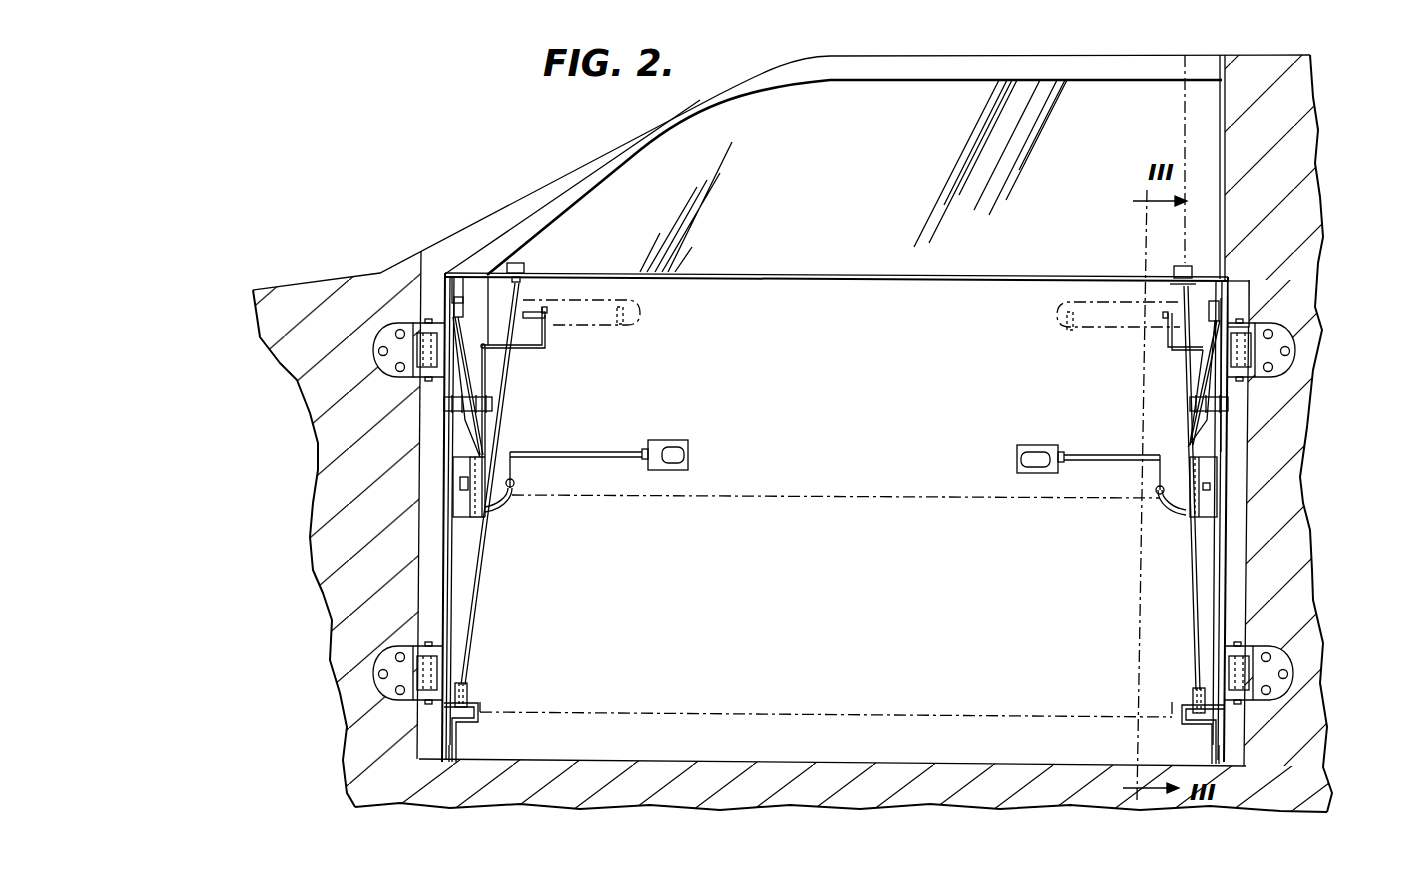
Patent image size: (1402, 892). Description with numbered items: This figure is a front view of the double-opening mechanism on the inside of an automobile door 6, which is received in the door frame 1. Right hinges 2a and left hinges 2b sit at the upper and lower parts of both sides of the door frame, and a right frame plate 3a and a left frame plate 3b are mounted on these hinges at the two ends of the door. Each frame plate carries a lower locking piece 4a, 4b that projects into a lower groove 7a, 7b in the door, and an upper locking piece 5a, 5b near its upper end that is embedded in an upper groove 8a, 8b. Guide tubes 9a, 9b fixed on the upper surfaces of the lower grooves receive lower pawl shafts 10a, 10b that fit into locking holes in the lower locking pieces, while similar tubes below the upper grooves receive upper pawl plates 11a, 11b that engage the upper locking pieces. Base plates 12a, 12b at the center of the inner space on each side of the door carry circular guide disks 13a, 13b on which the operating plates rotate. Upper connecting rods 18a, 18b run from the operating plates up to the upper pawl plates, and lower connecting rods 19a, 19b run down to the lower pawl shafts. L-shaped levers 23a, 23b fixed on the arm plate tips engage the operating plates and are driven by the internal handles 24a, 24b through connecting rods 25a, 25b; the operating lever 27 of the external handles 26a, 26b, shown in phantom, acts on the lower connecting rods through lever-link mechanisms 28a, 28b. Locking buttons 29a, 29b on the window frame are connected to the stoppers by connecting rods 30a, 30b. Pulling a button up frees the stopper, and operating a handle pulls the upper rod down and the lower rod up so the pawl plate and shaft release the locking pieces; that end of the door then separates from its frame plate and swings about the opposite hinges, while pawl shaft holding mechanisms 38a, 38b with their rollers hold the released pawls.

The door frame 1 is at (293, 372).
The right hinges 2a is at (1275, 360).
The left hinges 2b is at (415, 352).
The right frame plate 3a is at (1230, 530).
The left frame plate 3b is at (445, 543).
The lower locking piece 4a is at (1228, 725).
The lower locking piece 4b is at (452, 762).
The upper locking piece 5a is at (1255, 312).
The upper locking piece 5b is at (452, 305).
The door 6 is at (818, 745).
The lower groove 7a is at (1186, 727).
The lower groove 7b is at (478, 722).
The upper groove 8a is at (1216, 318).
The upper groove 8b is at (457, 317).
The guide tube 9a is at (1193, 692).
The guide tube 9b is at (468, 690).
The lower pawl shaft 10a is at (1178, 700).
The lower pawl shaft 10b is at (468, 692).
The upper pawl plate 11a is at (1205, 312).
The upper pawl plate 11b is at (527, 273).
The base plate 12a is at (1217, 478).
The base plate 12b is at (453, 497).
The right circular guide disk 13a is at (1294, 563).
The left circular guide disk 13b is at (487, 460).
The upper connecting rod 18a is at (1205, 425).
The upper connecting rod 18b is at (462, 372).
The lower connecting rod 19a is at (1202, 607).
The lower connecting rod 19b is at (478, 613).
The L-shaped lever 23a is at (1152, 494).
The L-shaped lever 23b is at (512, 468).
The internal handle 24a is at (1025, 450).
The internal handle 24b is at (690, 452).
The connecting rod 25a is at (1112, 461).
The connecting rod 25b is at (632, 458).
The external handle 26a is at (1097, 312).
The external handle 26b is at (628, 300).
The operating lever 27 is at (587, 328).
The lever-link mechanism 28a is at (1168, 338).
The lever-link mechanism 28b is at (512, 348).
The right locking button 29a is at (1192, 268).
The locking button 29b is at (516, 262).
The connecting rod 30a is at (1207, 290).
The connecting rod 30b is at (443, 378).
The pawl shaft holding mechanism 38a is at (1190, 404).
The pawl shaft holding mechanism 38b is at (493, 404).